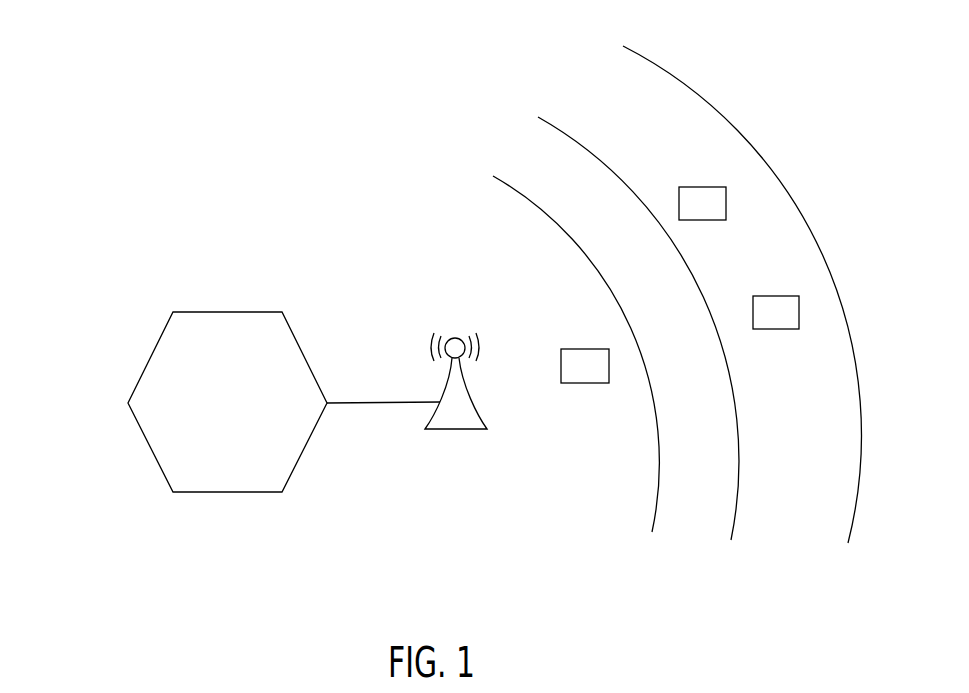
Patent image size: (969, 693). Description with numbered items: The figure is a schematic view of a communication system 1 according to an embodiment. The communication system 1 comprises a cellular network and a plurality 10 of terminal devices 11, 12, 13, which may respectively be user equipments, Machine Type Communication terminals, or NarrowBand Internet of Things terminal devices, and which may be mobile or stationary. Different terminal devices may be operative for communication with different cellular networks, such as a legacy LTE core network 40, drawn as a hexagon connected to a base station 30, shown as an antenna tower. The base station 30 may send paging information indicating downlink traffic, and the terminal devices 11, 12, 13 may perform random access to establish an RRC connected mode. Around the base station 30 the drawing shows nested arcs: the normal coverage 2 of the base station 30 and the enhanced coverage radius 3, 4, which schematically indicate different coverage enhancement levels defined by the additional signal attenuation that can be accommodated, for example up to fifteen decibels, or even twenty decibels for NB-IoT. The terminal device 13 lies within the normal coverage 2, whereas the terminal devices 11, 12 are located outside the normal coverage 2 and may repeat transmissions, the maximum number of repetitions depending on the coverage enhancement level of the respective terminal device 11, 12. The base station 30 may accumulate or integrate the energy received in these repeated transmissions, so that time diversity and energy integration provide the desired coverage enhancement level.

The communication system 1 is at (82, 57).
The normal coverage 2 is at (652, 522).
The enhanced coverage radius 3 is at (731, 528).
The enhanced coverage radius 4 is at (688, 85).
The plurality of terminal devices 10 is at (647, 175).
The terminal device 11 is at (697, 187).
The terminal device 12 is at (770, 296).
The terminal device 13 is at (580, 349).
The base station 30 is at (487, 429).
The legacy LTE core network 40 is at (163, 341).